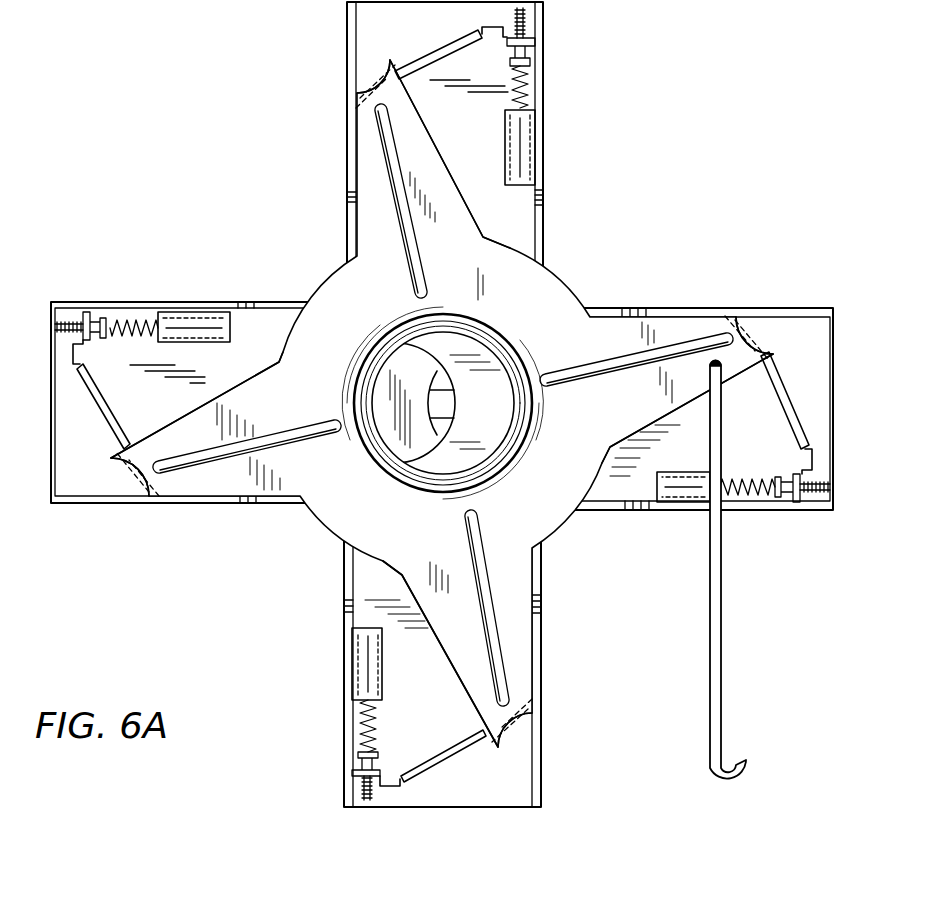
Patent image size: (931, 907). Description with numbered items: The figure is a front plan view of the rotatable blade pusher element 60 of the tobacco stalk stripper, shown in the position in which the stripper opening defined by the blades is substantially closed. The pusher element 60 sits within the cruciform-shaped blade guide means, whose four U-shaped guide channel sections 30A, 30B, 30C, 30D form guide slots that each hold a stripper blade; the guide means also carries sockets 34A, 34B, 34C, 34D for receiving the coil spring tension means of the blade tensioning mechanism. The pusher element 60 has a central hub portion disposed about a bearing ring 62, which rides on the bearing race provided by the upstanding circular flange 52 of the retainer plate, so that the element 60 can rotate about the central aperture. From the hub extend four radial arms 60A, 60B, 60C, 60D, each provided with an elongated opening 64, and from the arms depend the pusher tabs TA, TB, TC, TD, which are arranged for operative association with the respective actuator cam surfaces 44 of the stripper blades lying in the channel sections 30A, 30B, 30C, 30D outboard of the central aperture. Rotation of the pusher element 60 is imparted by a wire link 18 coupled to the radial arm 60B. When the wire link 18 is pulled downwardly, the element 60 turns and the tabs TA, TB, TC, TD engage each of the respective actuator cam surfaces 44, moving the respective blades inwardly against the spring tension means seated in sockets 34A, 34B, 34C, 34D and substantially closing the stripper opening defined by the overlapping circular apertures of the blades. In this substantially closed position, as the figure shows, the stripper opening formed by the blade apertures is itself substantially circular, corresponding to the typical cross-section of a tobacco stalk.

The wire link 18 is at (716, 690).
The guide channel section 30A is at (437, 122).
The guide channel section 30B is at (715, 450).
The guide channel section 30C is at (409, 703).
The guide channel section 30D is at (195, 367).
The socket 34A is at (523, 143).
The socket 34B is at (690, 500).
The socket 34C is at (363, 663).
The socket 34D is at (197, 322).
The actuator cam surface 44 is at (433, 62).
The upstanding circular flange 52 is at (513, 388).
The rotatable blade pusher element 60 is at (338, 308).
The radial arm 60A is at (432, 250).
The radial arm 60B is at (607, 420).
The radial arm 60C is at (435, 633).
The radial arm 60D is at (189, 493).
The bearing ring 62 is at (517, 444).
The slot 64 is at (401, 226).
The pusher tab TA is at (389, 58).
The pusher tab TB is at (768, 344).
The pusher tab TC is at (512, 738).
The pusher tab TD is at (137, 483).